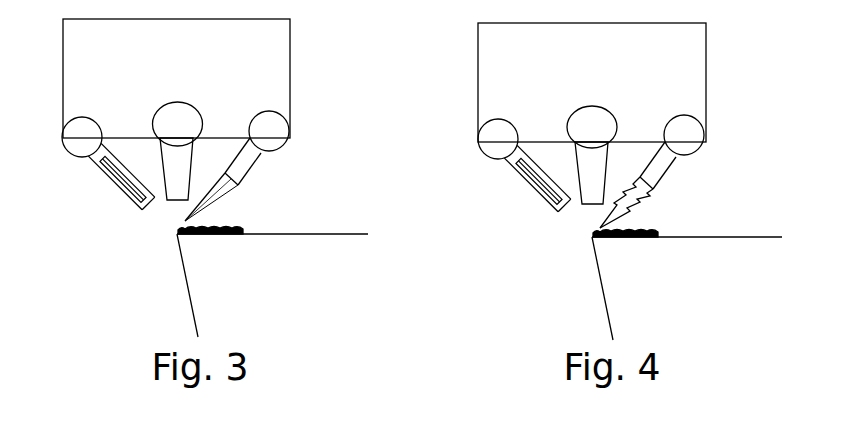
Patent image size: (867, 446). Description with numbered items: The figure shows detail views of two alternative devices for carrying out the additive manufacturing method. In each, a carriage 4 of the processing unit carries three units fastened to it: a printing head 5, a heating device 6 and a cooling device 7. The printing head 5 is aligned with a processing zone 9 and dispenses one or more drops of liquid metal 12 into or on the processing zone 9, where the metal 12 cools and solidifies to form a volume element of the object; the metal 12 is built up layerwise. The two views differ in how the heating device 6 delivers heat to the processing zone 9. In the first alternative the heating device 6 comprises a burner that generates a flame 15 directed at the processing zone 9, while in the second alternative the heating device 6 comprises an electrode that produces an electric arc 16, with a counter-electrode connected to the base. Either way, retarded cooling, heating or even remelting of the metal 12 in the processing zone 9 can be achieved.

In FIG. 3, the carriage 4 is at (171, 80).
In FIG. 4, the carriage 4 is at (587, 82).
In FIG. 3, the printing head 5 is at (158, 160).
In FIG. 4, the printing head 5 is at (573, 164).
In FIG. 3, the heating device 6 is at (253, 173).
In FIG. 4, the heating device 6 is at (668, 177).
In FIG. 3, the cooling device 7 is at (108, 182).
In FIG. 4, the cooling device 7 is at (525, 183).
In FIG. 3, the processing zone 9 is at (173, 235).
In FIG. 4, the processing zone 9 is at (589, 237).
In FIG. 3, the metal 12 is at (220, 240).
In FIG. 4, the metal 12 is at (636, 245).
In FIG. 3, the flame 15 is at (232, 207).
In FIG. 4, the electric arc 16 is at (647, 210).